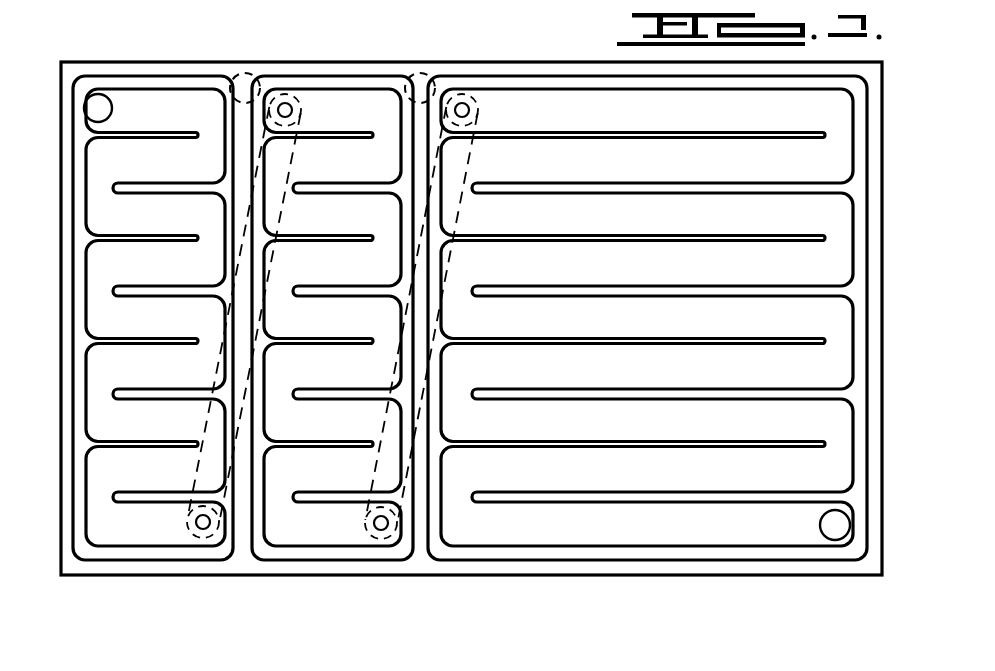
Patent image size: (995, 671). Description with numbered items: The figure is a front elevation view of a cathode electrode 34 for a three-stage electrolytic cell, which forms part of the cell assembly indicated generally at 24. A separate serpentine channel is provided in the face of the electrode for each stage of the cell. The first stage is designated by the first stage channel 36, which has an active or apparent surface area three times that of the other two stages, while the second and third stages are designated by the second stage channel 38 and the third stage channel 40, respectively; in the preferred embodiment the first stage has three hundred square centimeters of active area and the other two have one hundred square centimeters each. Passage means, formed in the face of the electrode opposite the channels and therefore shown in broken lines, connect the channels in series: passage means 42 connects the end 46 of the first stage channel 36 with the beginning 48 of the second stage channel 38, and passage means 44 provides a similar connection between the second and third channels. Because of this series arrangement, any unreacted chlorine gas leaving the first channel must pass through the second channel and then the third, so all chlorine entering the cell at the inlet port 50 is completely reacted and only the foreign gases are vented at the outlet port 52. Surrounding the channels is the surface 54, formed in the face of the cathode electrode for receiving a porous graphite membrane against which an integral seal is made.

The heater panel assembly 24 is at (466, 2).
The cathode electrode 34 is at (160, 58).
The first stage channel 36 is at (546, 104).
The second stage channel 38 is at (331, 104).
The third stage channel 40 is at (100, 208).
The passage means 42 is at (470, 210).
The passage means 44 is at (290, 208).
The end of first stage channel 46 is at (466, 102).
The beginning of second stage channel 48 is at (374, 523).
The inlet port 50 is at (831, 539).
The outlet port 52 is at (107, 97).
The surface 54 is at (862, 345).